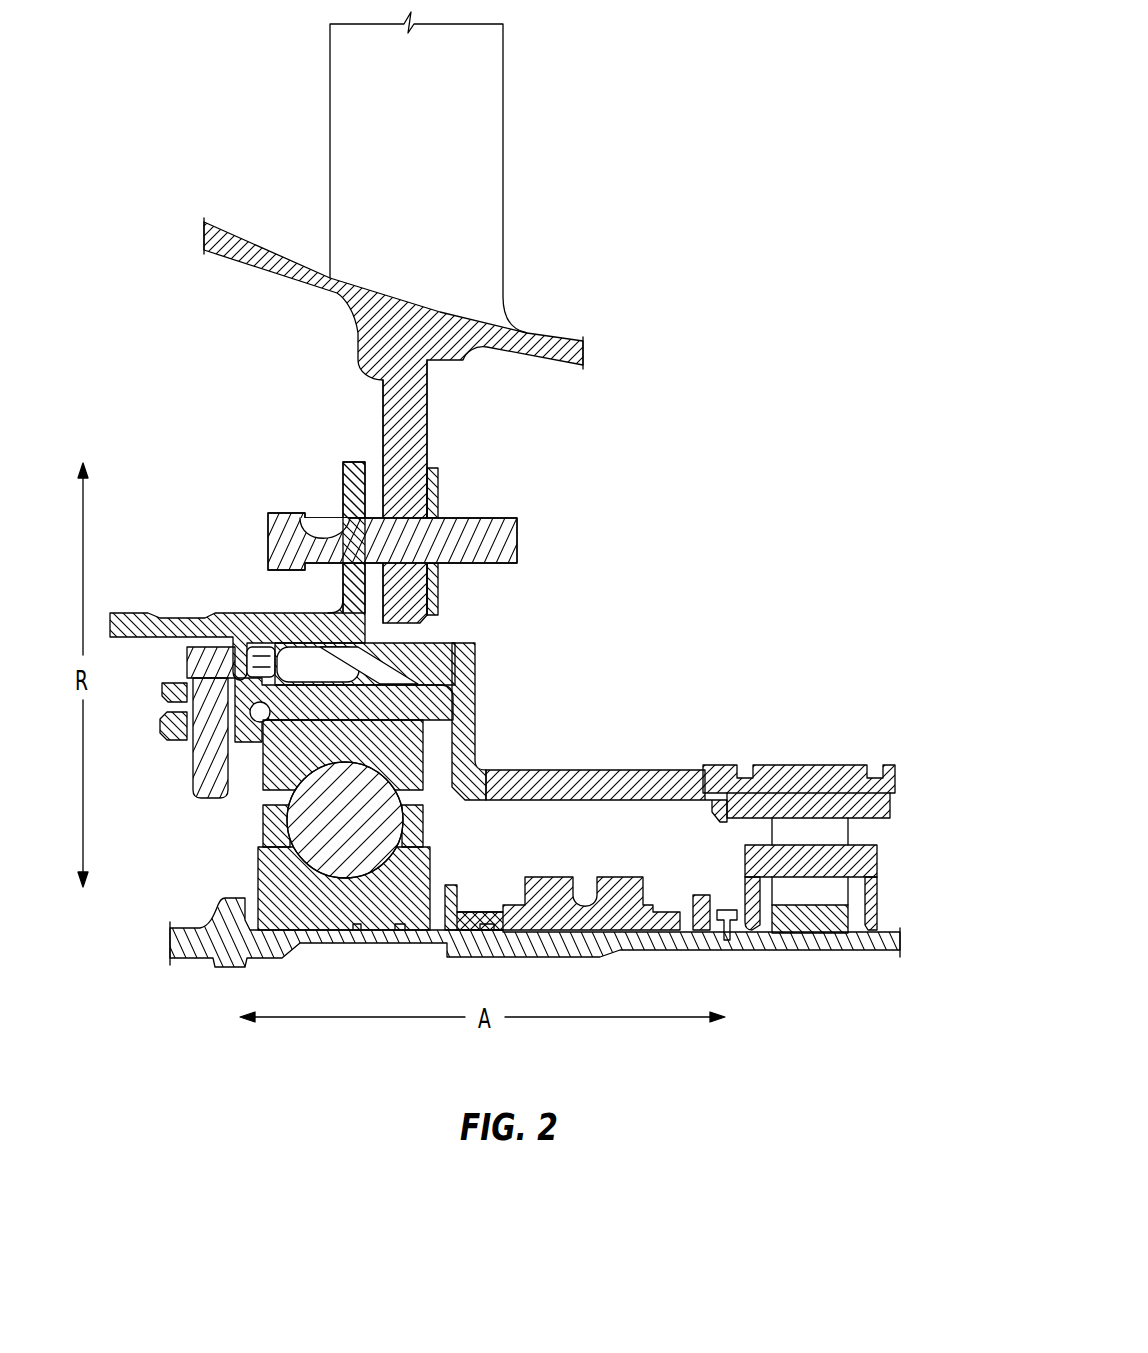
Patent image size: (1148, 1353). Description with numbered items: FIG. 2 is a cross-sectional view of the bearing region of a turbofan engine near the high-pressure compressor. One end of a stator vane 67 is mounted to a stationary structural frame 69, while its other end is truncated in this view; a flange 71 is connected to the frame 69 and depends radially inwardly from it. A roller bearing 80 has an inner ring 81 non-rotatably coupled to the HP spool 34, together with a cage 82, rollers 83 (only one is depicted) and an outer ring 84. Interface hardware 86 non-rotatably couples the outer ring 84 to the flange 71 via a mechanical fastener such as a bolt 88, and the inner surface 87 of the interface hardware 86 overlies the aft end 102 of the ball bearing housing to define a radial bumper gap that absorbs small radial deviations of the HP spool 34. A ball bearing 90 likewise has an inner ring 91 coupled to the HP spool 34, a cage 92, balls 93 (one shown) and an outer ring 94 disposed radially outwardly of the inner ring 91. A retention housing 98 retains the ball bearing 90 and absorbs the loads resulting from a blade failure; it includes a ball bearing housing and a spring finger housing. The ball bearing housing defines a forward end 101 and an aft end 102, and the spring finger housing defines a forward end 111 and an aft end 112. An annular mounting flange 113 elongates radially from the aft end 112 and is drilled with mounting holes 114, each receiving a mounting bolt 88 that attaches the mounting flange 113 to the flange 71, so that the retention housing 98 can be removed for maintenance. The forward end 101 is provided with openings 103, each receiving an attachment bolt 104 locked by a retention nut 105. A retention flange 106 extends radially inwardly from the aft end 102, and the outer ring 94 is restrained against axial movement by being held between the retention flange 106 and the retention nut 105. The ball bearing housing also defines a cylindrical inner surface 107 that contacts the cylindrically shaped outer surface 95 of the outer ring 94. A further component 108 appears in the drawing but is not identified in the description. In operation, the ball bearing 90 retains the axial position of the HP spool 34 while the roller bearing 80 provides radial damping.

The HP spool 34 is at (517, 942).
The stator vane 67 is at (487, 230).
The stationary structural frame 69 is at (548, 344).
The flange 71 is at (420, 430).
The roller bearing 80 is at (732, 848).
The inner ring 81 is at (873, 922).
The cage 82 is at (870, 863).
The rollers 83 is at (807, 892).
The outer ring 84 is at (887, 802).
The interface hardware 86 is at (535, 782).
The inner surface 87 is at (428, 690).
The bolt 88 is at (465, 532).
The ball bearing 90 is at (455, 835).
The inner ring 91 is at (418, 877).
The cage 92 is at (267, 830).
The balls 93 is at (300, 810).
The outer ring 94 is at (283, 770).
The outer surface 95 is at (348, 708).
The retention housing 98 is at (182, 557).
The forward end 101 is at (173, 685).
The aft end 102 is at (448, 703).
The openings 103 is at (200, 697).
The attachment bolt 104 is at (197, 772).
The retention nut 105 is at (170, 727).
The retention flange 106 is at (433, 742).
The cylindrical inner surface 107 is at (425, 730).
The seal 108 is at (277, 660).
The forward end 111 is at (105, 625).
The aft end 112 is at (318, 598).
The annular mounting flange 113 is at (350, 477).
The mounting holes 114 is at (302, 532).